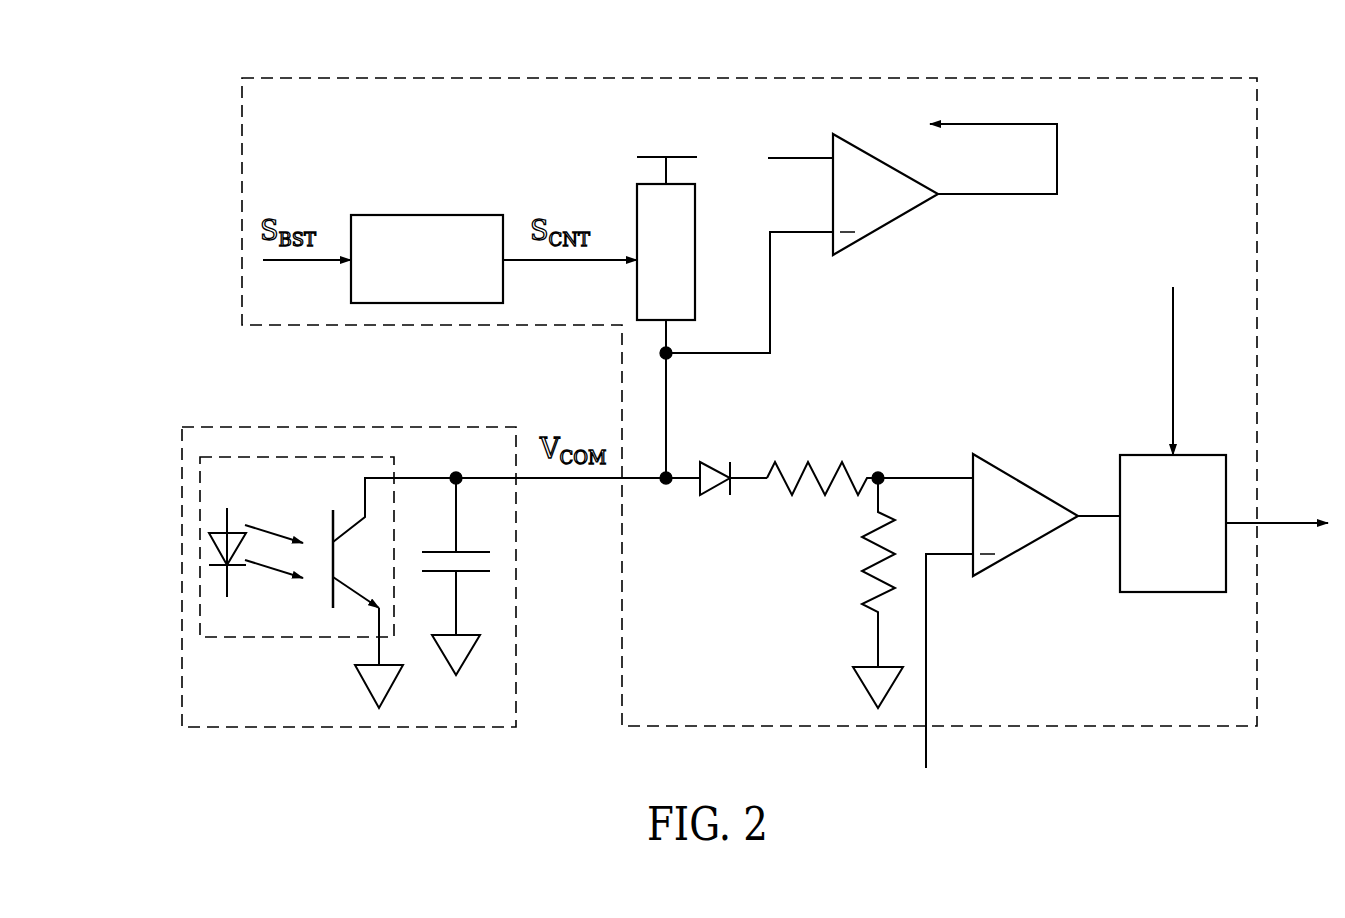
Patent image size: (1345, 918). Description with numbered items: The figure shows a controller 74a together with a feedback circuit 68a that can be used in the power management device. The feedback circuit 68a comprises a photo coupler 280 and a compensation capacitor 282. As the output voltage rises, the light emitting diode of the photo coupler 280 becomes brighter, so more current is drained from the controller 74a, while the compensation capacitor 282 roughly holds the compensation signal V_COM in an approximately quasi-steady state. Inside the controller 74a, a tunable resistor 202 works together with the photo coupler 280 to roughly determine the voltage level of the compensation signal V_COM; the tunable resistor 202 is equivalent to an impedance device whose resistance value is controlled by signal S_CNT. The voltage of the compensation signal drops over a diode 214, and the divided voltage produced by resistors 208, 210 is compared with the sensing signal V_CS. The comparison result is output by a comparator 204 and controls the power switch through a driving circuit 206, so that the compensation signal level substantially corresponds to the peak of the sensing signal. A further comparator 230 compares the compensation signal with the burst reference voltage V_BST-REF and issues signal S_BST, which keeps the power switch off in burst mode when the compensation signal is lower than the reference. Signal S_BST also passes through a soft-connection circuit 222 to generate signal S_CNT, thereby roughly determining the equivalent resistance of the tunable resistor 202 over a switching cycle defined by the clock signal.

The controller 74a is at (1195, 78).
The soft-connection circuit 222 is at (427, 259).
The tunable resistor 202 is at (637, 200).
The comparator 230 is at (888, 227).
The diode 214 is at (708, 458).
The resistor 208 is at (795, 452).
The resistor 210 is at (863, 562).
The comparator 204 is at (1023, 550).
The driving circuit 206 is at (1224, 421).
The photo coupler 280 is at (297, 457).
The feedback circuit 68a is at (460, 427).
The compensation capacitor 282 is at (493, 558).